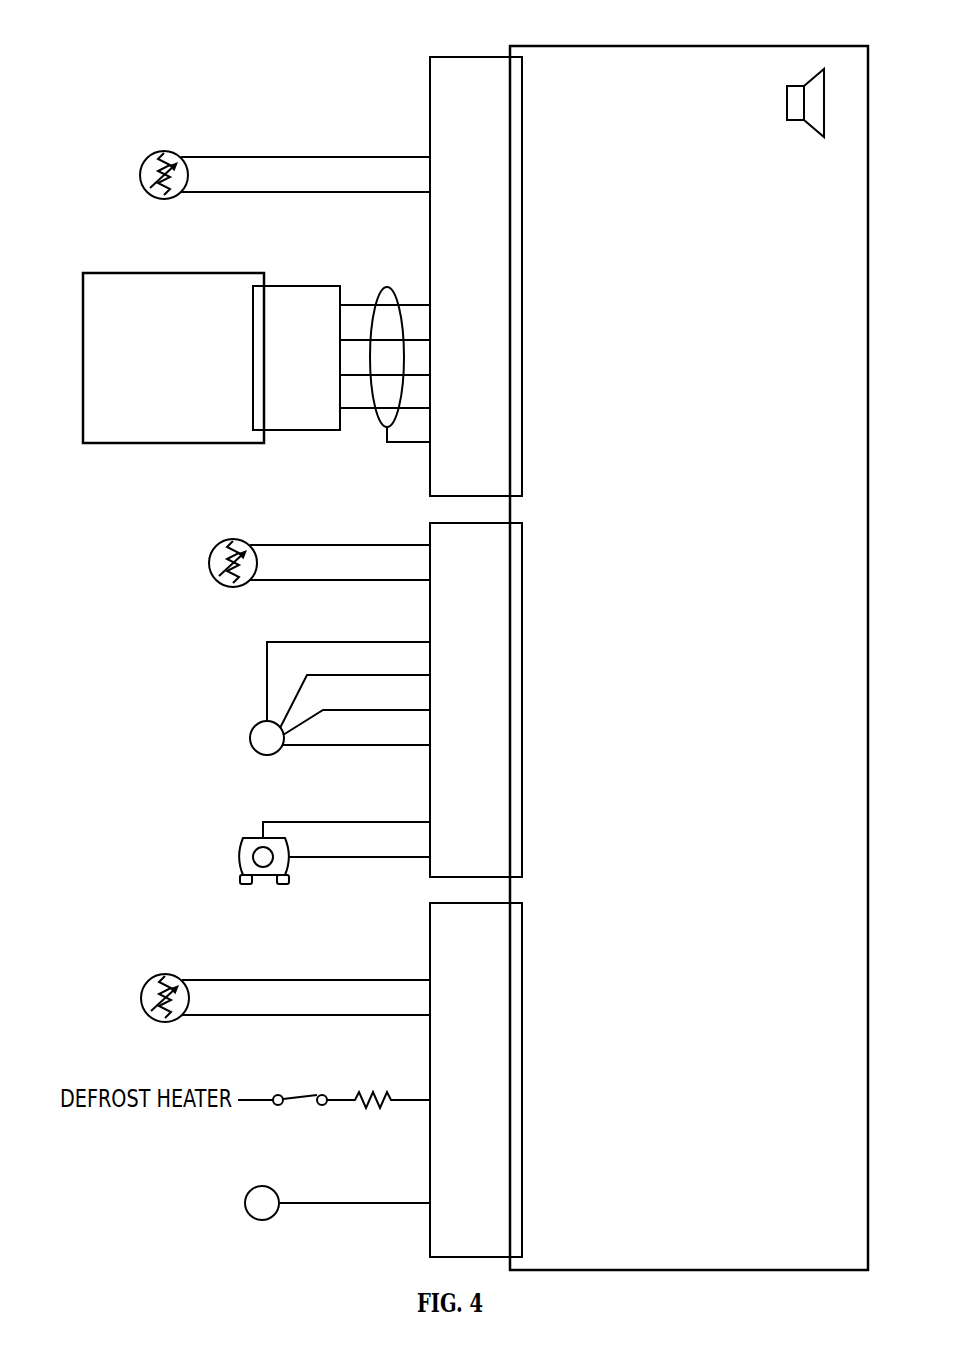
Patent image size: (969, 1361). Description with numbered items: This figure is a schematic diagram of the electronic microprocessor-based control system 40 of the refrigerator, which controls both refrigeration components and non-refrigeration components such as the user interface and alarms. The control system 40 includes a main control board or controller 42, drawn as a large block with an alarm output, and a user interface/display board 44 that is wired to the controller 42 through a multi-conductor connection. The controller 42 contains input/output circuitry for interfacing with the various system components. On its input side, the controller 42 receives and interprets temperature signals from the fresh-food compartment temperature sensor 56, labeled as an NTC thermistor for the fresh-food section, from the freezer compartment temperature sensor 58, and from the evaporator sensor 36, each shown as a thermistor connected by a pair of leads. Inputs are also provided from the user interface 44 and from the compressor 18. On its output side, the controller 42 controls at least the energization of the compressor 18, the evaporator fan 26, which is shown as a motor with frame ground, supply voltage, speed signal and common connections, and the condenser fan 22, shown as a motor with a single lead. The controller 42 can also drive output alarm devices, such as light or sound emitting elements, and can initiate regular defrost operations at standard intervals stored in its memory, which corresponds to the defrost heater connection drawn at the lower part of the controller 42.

The electronic control system 40 is at (158, 54).
The main control board 42 is at (695, 46).
The user interface/display board 44 is at (82, 325).
The fresh-food compartment temperature sensor 56 is at (92, 162).
The freezer compartment temperature sensor 58 is at (98, 550).
The evaporator fan 26 is at (112, 720).
The compressor 18 is at (113, 848).
The evaporator sensor 36 is at (93, 982).
The condenser fan 22 is at (145, 1218).